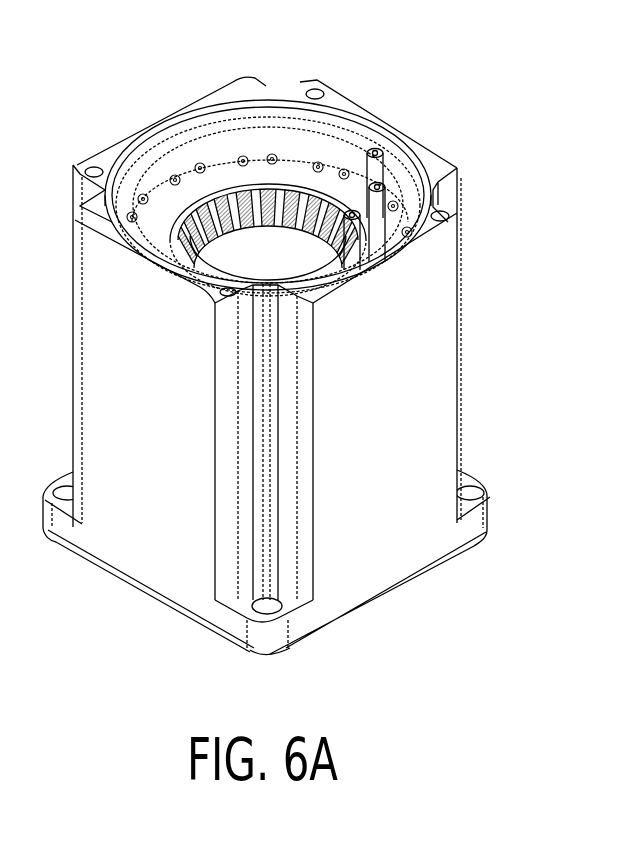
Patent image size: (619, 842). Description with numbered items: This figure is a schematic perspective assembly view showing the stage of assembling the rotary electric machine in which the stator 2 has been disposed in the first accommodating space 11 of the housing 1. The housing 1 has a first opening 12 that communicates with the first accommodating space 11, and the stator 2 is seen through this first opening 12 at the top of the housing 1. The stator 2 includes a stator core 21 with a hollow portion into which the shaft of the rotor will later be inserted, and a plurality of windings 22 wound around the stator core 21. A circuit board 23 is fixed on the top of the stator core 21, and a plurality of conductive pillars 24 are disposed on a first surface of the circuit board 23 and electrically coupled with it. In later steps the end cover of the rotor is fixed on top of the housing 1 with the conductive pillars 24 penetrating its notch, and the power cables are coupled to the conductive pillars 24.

The housing 1 is at (423, 322).
The first accommodating space 11 is at (182, 160).
The first opening 12 is at (130, 135).
The stator 2 is at (349, 154).
The stator core 21 is at (297, 210).
The windings 22 is at (380, 168).
The circuit board 23 is at (293, 172).
The conductive pillars 24 is at (407, 148).